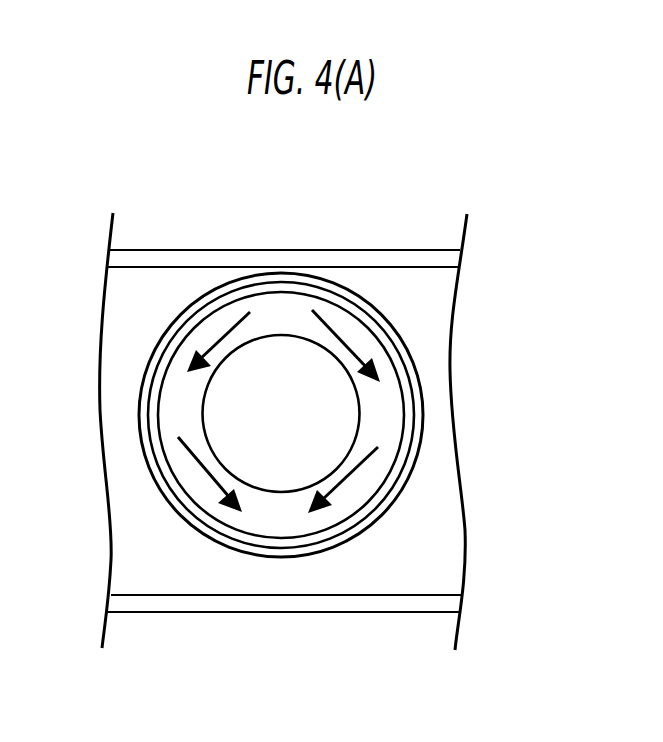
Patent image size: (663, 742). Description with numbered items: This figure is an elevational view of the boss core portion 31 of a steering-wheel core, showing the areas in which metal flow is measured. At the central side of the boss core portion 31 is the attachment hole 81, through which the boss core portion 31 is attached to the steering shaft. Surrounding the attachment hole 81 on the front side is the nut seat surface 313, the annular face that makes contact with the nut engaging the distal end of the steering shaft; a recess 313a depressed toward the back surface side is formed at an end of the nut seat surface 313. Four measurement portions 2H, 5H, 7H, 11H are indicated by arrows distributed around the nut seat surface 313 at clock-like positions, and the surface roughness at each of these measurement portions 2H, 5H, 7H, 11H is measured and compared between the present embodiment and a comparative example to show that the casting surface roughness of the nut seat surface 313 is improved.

The boss core portion 31 is at (172, 283).
The attachment hole 81 is at (282, 376).
The nut seat surface 313 is at (378, 407).
The recess 313a is at (393, 323).
The measurement portion 2H is at (357, 356).
The measurement portion 5H is at (357, 470).
The measurement portion 7H is at (202, 465).
The measurement portion 11H is at (213, 341).